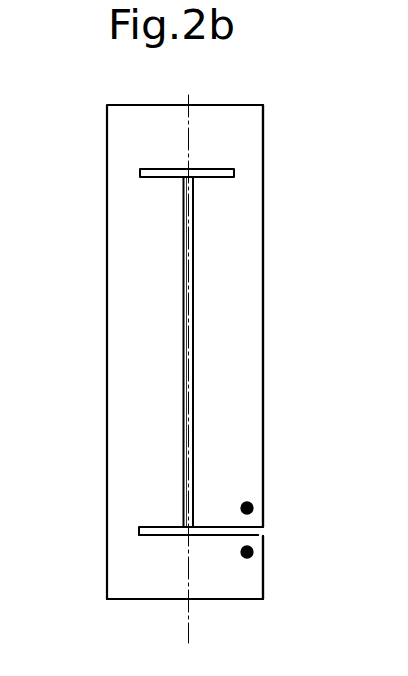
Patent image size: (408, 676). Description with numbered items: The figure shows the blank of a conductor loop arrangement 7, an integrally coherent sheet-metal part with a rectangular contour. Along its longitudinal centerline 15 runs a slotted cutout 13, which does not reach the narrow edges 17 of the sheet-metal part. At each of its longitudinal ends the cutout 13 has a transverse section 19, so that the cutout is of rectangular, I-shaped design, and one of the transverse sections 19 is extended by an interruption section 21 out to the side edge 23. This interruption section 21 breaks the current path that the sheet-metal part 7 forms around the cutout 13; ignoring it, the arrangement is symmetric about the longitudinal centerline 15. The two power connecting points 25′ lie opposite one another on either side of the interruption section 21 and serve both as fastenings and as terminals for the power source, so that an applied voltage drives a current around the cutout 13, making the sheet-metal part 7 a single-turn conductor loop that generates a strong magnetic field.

The conductor loop arrangement 7 is at (238, 222).
The slotted cutout 13 is at (193, 332).
The longitudinal centerline 15 is at (187, 613).
The narrow edges 17 is at (232, 601).
The transverse section 19 is at (150, 170).
The interruption section 21 is at (258, 535).
The side edge 23 is at (265, 405).
The power connecting points 25′ is at (247, 508).